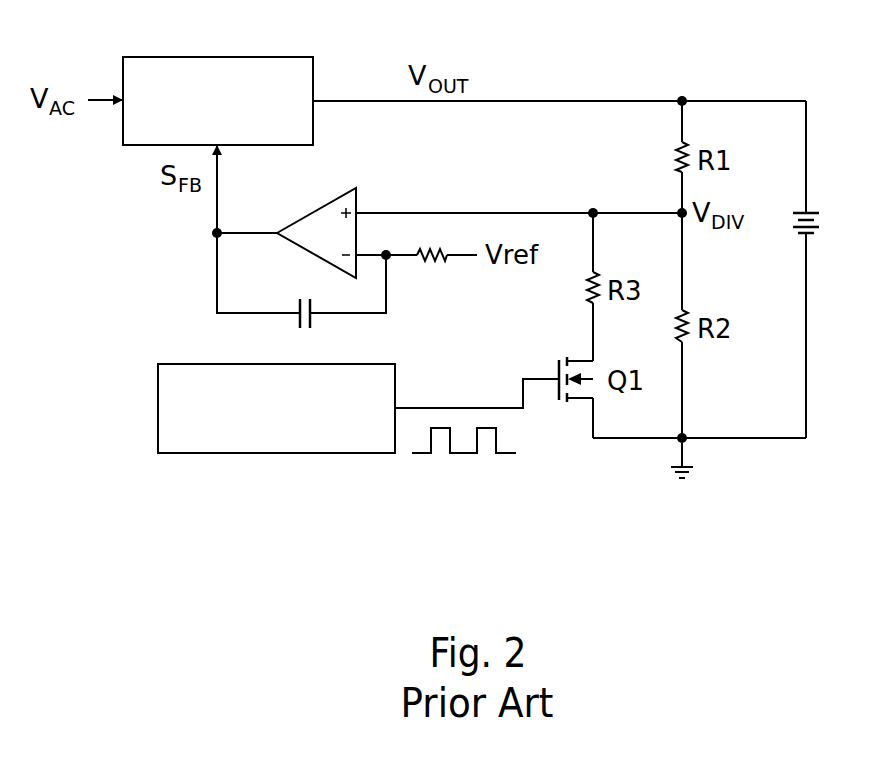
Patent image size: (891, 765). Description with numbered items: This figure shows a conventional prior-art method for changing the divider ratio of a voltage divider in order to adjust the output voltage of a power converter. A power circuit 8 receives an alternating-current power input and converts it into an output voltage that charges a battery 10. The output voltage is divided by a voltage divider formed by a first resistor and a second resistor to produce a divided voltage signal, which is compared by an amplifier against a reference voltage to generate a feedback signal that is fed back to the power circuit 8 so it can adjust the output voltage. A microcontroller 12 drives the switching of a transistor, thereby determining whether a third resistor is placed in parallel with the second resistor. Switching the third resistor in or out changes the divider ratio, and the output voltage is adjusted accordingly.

The power circuit 8 is at (210, 56).
The battery 10 is at (830, 203).
The microcontroller 12 is at (273, 455).